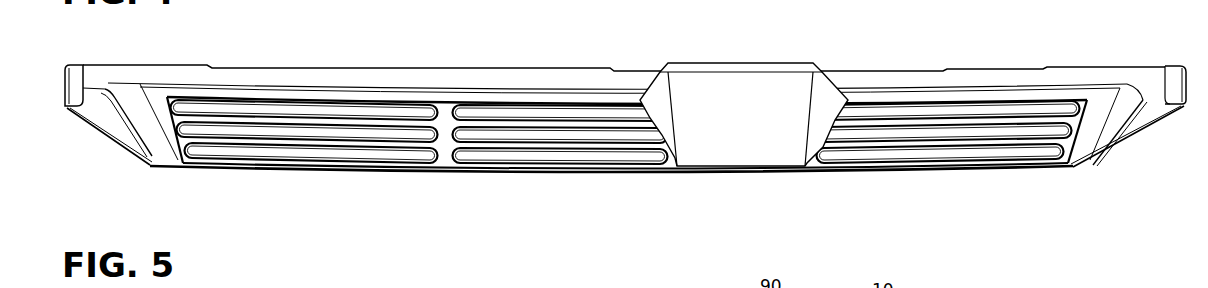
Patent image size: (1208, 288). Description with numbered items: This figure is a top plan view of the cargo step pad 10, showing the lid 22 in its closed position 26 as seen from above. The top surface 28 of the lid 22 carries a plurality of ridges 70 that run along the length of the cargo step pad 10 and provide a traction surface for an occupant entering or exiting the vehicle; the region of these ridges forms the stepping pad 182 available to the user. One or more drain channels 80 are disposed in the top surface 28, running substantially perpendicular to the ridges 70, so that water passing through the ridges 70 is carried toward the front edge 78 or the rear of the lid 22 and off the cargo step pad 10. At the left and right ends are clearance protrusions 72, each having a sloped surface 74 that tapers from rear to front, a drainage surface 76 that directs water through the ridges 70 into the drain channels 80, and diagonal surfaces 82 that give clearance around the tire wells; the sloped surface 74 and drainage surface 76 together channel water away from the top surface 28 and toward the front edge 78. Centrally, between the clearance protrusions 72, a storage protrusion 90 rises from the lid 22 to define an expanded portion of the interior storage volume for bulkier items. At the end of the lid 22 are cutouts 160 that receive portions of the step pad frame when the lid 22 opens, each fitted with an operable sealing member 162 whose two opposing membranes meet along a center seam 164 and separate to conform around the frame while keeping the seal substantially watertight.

The cargo step pad 10 is at (899, 39).
The lid 22 is at (1072, 60).
The closed position 26 is at (1103, 60).
The top surface 28 is at (315, 110).
The ridges 70 is at (385, 133).
The clearance protrusions 72 is at (1181, 63).
The sloped surface 74 is at (1163, 104).
The drainage surface 76 is at (1123, 114).
The front edge 78 is at (592, 173).
The drain channels 80 is at (445, 137).
The diagonal surfaces 82 is at (1157, 145).
The storage protrusion 90 is at (763, 100).
The cutouts 160 is at (64, 73).
The operable sealing member 162 is at (78, 72).
The center seam 164 is at (66, 94).
The stepping pad 182 is at (900, 134).